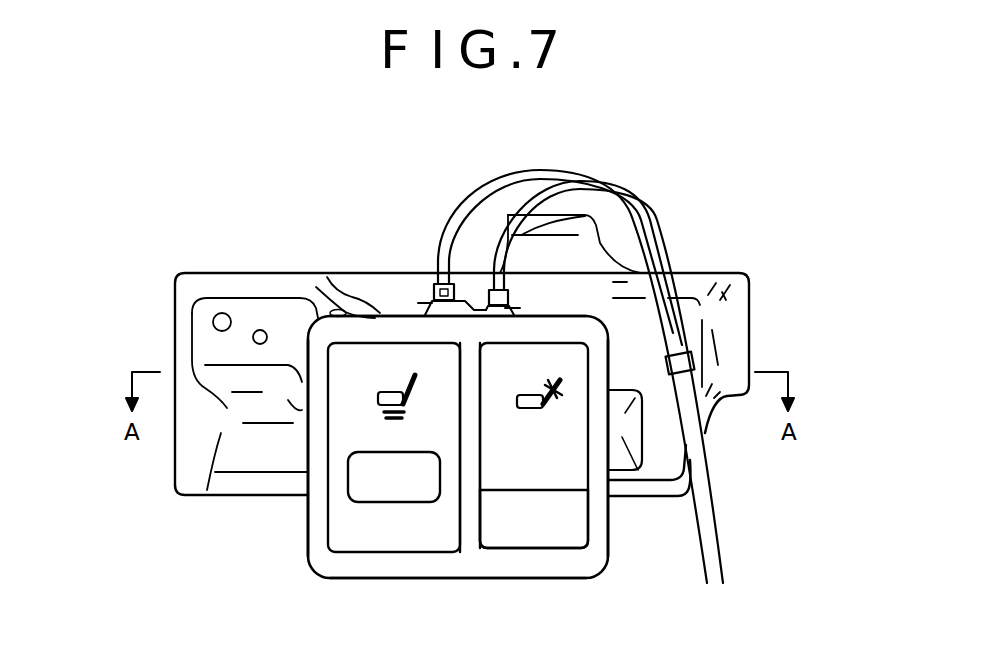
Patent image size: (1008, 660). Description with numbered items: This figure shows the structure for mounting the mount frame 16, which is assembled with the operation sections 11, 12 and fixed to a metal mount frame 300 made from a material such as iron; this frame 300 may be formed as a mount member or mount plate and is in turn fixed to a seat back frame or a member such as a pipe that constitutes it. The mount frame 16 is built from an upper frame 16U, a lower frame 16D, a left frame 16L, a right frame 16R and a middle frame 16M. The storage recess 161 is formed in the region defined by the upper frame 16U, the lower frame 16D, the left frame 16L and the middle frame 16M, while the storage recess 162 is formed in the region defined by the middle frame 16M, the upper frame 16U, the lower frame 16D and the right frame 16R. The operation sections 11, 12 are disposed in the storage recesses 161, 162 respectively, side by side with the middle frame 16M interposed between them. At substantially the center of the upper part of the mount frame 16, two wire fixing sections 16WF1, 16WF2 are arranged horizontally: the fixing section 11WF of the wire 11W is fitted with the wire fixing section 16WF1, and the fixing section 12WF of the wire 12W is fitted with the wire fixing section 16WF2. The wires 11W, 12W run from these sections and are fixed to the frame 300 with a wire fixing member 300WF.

The mount frame 300 is at (200, 272).
The wire fixing member 300WF is at (697, 360).
The mount frame 16 is at (306, 500).
The upper frame 16U is at (327, 273).
The left frame 16L is at (318, 528).
The right frame 16R is at (600, 525).
The lower frame 16D is at (433, 562).
The middle frame 16M is at (472, 523).
The storage recess 161 is at (393, 478).
The storage recess 162 is at (551, 537).
The operation section 11 is at (392, 540).
The operation section 12 is at (583, 473).
The wire 11W is at (472, 192).
The wire 12W is at (503, 200).
The fixing section 11WF is at (438, 268).
The fixing section 12WF is at (585, 213).
The wire fixing section 16WF1 is at (425, 304).
The wire fixing section 16WF2 is at (510, 307).